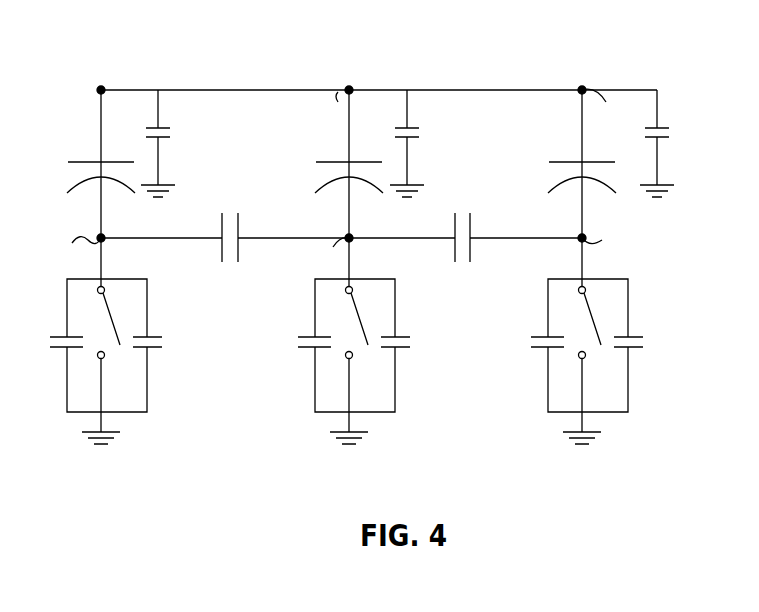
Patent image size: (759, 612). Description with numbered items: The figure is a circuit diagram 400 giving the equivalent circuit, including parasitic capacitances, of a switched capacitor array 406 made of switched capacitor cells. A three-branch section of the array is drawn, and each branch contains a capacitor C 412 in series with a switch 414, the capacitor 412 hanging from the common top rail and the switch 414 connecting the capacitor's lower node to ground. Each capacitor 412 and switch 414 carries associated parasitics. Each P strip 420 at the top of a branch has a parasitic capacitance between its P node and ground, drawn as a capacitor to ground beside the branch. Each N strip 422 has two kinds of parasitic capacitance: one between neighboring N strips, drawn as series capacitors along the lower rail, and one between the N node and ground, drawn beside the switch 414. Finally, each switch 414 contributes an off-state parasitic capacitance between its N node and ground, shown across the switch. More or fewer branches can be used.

The circuit diagram 400 is at (655, 72).
The switched capacitor array 406 is at (697, 223).
The capacitor C 412 is at (298, 162).
The switch 414 is at (118, 351).
The P strip 420 is at (442, 90).
The N strip 422 is at (262, 238).